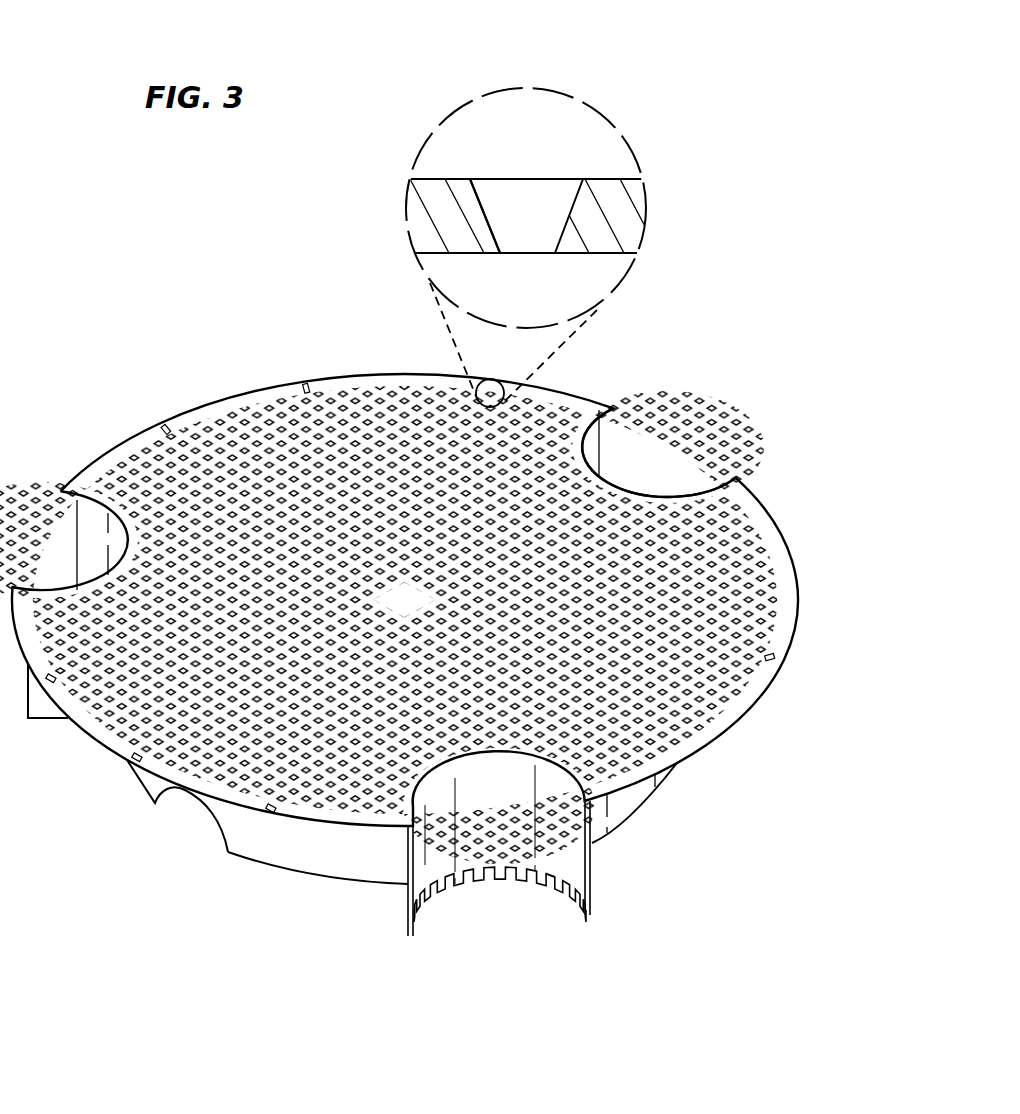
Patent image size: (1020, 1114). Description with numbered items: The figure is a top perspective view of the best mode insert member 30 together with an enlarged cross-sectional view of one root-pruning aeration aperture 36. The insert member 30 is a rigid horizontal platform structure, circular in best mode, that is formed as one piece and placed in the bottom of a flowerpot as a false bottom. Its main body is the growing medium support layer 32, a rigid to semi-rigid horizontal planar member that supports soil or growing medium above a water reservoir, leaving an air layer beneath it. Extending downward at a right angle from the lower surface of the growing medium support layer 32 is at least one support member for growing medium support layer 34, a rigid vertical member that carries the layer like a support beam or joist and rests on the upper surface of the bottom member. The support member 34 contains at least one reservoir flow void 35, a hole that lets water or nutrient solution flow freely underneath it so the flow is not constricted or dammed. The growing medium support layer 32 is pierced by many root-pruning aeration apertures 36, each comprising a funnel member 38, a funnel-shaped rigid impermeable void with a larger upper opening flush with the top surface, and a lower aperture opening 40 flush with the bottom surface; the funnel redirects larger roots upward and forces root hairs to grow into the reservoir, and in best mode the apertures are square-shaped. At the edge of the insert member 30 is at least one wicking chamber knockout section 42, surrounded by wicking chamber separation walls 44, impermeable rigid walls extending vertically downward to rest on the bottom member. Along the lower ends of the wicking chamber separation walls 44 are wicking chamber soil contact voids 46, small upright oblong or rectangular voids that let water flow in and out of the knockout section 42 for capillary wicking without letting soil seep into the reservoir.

The insert member 30 is at (191, 277).
The growing medium support layer 32 is at (128, 740).
The support member for growing medium support layer 34 is at (300, 850).
The reservoir flow void 35 is at (192, 805).
The root-pruning aeration aperture 36 is at (620, 134).
The funnel member 38 is at (488, 215).
The lower aperture opening 40 is at (525, 253).
The wicking chamber knockout section 42 is at (627, 487).
The wicking chamber separation wall 44 is at (543, 888).
The wicking chamber soil contact void 46 is at (553, 890).